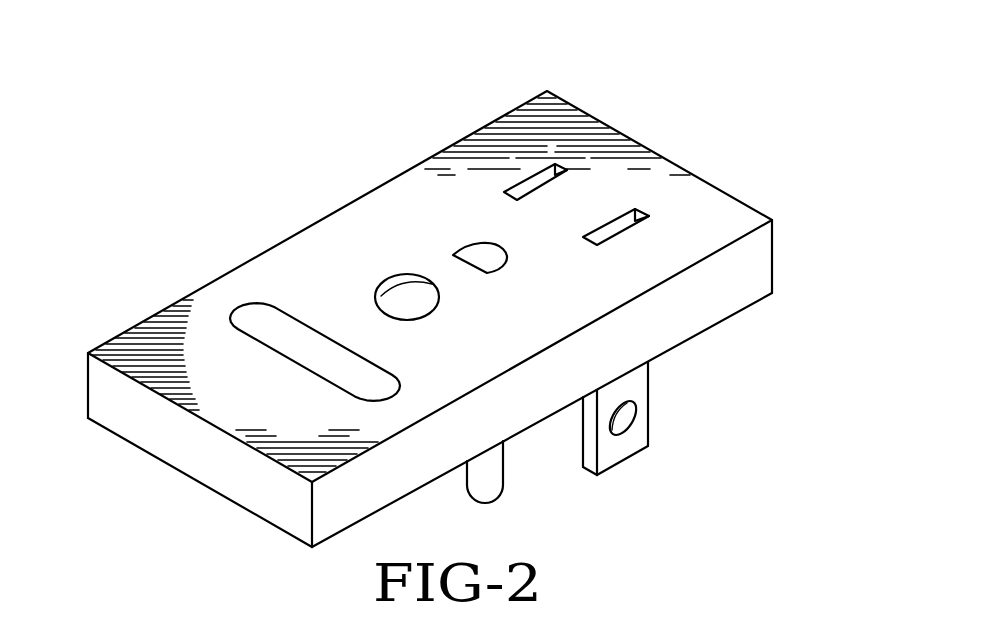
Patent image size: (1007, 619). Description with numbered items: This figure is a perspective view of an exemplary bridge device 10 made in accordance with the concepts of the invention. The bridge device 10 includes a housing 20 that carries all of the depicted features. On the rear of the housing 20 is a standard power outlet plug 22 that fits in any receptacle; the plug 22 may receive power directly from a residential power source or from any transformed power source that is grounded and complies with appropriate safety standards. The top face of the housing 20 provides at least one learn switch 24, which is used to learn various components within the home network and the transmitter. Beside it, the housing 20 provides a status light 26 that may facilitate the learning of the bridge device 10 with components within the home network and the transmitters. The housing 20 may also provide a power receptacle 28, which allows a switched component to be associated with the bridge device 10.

The bridge device 10 is at (125, 190).
The housing 20 is at (676, 156).
The power outlet plug 22 is at (642, 395).
The learn switch 24 is at (295, 337).
The status light 26 is at (393, 292).
The power receptacle 28 is at (528, 183).